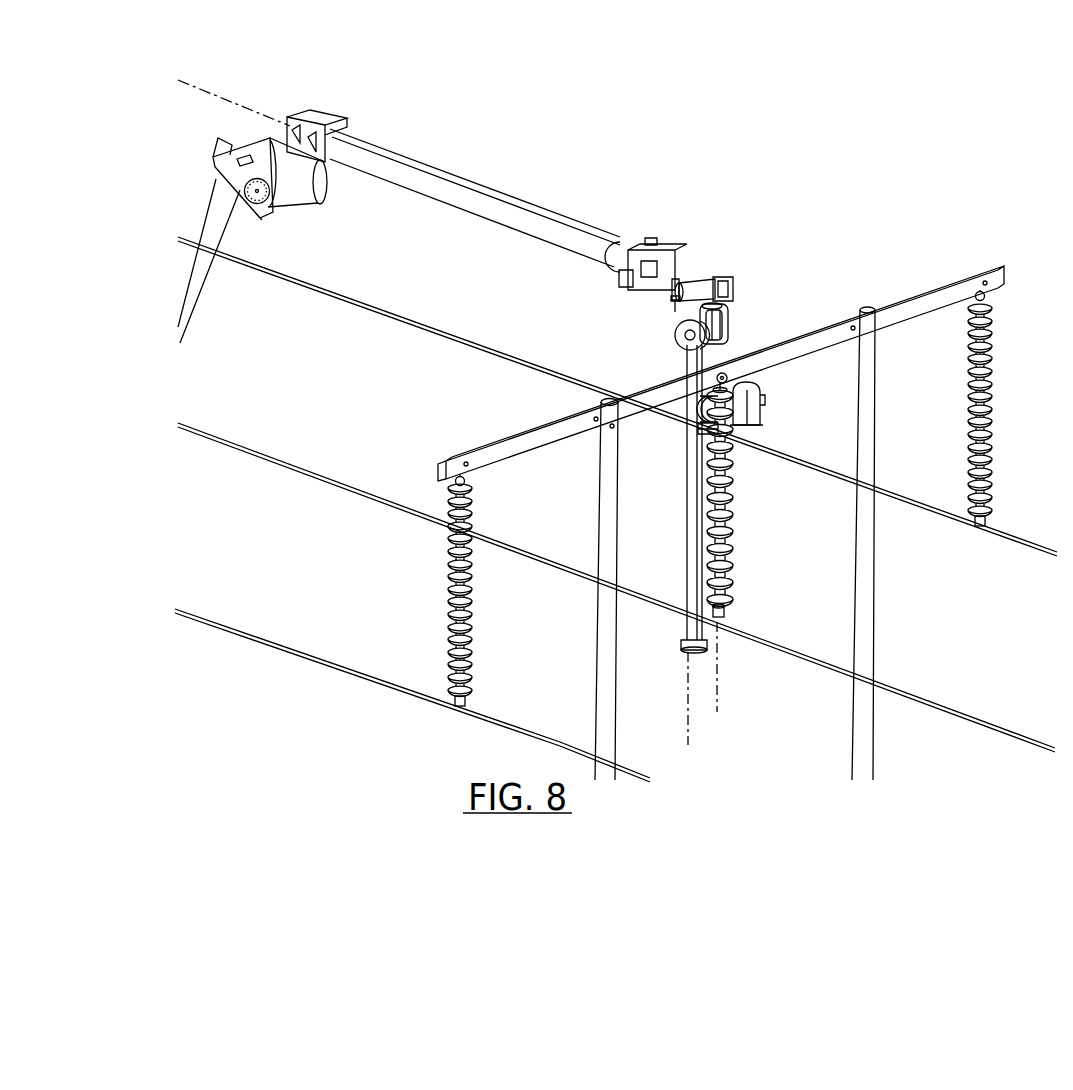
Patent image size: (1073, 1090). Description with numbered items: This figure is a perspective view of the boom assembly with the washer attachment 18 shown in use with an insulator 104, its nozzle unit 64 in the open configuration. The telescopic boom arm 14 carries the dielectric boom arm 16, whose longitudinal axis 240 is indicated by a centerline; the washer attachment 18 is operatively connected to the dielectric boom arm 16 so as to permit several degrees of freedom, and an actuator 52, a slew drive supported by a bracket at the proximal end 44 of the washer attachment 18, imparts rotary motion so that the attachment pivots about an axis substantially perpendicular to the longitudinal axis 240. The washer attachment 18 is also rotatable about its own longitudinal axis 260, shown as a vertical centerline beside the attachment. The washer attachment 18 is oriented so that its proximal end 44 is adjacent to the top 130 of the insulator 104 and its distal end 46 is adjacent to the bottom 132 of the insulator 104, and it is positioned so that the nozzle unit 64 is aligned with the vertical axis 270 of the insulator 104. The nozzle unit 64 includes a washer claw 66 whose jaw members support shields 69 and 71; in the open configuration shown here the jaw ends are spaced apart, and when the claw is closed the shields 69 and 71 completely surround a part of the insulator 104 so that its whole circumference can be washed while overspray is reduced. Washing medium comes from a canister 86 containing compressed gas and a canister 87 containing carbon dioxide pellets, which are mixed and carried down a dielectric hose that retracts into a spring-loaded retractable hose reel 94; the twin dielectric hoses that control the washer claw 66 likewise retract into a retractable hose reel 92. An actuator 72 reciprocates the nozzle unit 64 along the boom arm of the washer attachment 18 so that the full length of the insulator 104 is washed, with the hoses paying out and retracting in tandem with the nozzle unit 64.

The telescopic boom arm 14 is at (202, 258).
The dielectric boom arm 16 is at (492, 192).
The longitudinal axis 240 is at (228, 100).
The actuator 52 is at (677, 263).
The canister 87 is at (700, 285).
The canister 86 is at (723, 280).
The actuator 72 is at (723, 293).
The retractable hose reel 94 is at (727, 323).
The top of the insulator 130 is at (720, 387).
The retractable hose reel 92 is at (673, 332).
The proximal end 44 is at (687, 362).
The nozzle unit 64 is at (763, 393).
The shield 69 is at (747, 403).
The washer claw 66 is at (700, 427).
The shield 71 is at (703, 432).
The insulator 104 is at (727, 518).
The bottom of the insulator 132 is at (723, 610).
The washer attachment 18 is at (690, 565).
The distal end 46 is at (683, 630).
The vertical axis 270 is at (720, 682).
The longitudinal axis 260 is at (690, 715).